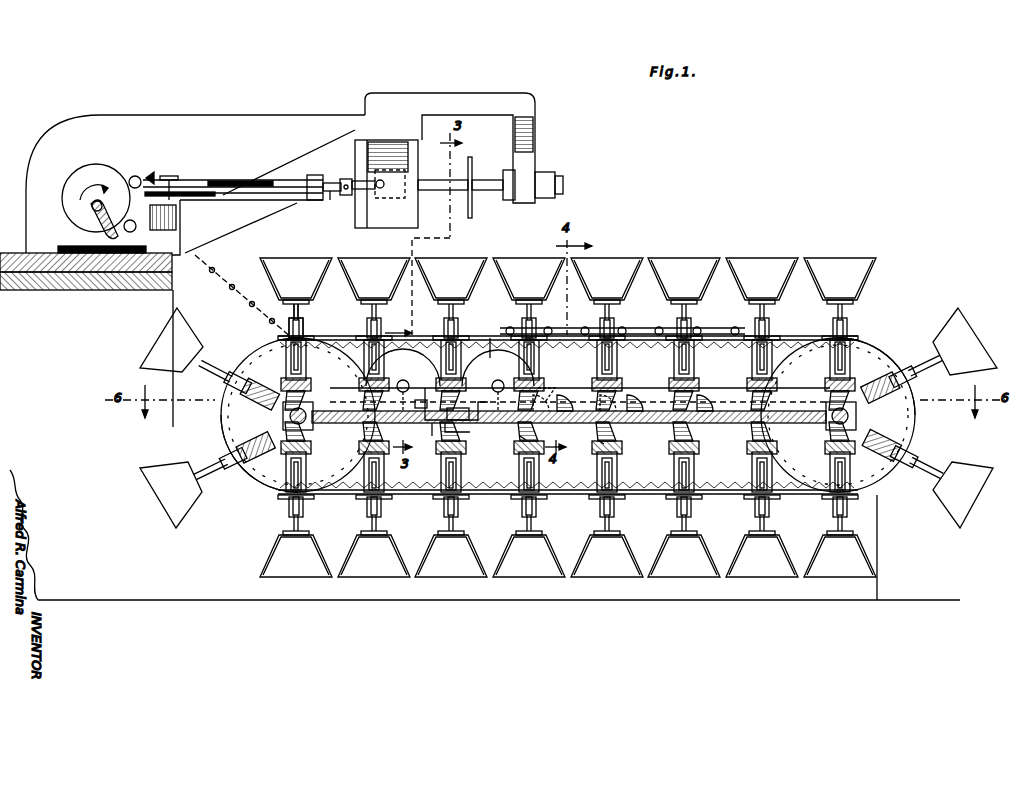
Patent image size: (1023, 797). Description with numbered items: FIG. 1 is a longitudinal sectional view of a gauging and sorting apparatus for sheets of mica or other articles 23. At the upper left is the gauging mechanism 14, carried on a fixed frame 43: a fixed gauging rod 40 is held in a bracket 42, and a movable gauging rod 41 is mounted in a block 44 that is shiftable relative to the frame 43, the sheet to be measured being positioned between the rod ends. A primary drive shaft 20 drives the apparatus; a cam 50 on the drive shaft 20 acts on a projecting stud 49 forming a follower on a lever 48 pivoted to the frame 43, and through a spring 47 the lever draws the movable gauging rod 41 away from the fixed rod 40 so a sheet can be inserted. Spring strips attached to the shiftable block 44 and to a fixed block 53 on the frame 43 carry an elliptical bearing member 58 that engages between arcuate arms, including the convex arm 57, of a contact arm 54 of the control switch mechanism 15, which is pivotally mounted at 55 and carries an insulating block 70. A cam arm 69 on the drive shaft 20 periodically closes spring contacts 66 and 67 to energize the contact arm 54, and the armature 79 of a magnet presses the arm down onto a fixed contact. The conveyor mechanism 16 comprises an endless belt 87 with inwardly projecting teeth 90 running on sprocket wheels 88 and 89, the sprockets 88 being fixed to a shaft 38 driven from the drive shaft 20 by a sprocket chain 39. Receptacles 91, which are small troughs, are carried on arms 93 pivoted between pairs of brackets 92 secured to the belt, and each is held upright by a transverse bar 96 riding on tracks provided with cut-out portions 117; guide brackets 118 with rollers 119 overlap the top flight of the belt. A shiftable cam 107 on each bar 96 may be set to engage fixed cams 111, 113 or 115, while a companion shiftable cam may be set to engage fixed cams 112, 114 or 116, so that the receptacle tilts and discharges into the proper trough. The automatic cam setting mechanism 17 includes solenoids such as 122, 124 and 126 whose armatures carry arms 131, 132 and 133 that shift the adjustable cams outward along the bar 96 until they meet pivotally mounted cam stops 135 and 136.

The gauging mechanism 14 is at (474, 92).
The control switch mechanism 15 is at (190, 178).
The conveyor mechanism 16 is at (706, 254).
The automatic cam setting mechanism 17 is at (177, 218).
The primary drive shaft 20 is at (92, 206).
The sheets of mica or other articles 23 is at (473, 170).
The shaft 38 is at (310, 412).
The sprocket chain 39 is at (244, 272).
The fixed gauging rod 40 is at (490, 192).
The movable gauging rod 41 is at (438, 192).
The bracket 42 is at (532, 148).
The fixed frame 43 is at (262, 115).
The block 44 is at (402, 145).
The spring 47 is at (152, 172).
The lever 48 is at (134, 176).
The projecting stud 49 is at (136, 229).
The cam 50 is at (92, 168).
The fixed block 53 is at (385, 196).
The contact arm 54 is at (283, 180).
The pivotal mounting 55 is at (316, 183).
The arcuate arm 57 is at (323, 200).
The elliptical bearing member 58 is at (344, 179).
The spring contact 66 is at (82, 262).
The second spring contact 67 is at (110, 262).
The cam arm 69 is at (104, 222).
The insulating block 70 is at (230, 180).
The armature 79 is at (168, 175).
The endless belt 87 is at (872, 350).
The sprocket wheels 88 is at (266, 478).
The sprocket wheels 89 is at (872, 470).
The inwardly projecting teeth 90 is at (321, 453).
The receptacles 91 is at (780, 258).
The brackets 92 is at (305, 328).
The arm 93 is at (302, 312).
The transverse bar 96 is at (463, 380).
The shiftable cam 107 is at (600, 386).
The fixed cam 111 is at (574, 406).
The fixed cam 112 is at (512, 432).
The fixed cam 113 is at (624, 399).
The fixed cam 114 is at (590, 436).
The fixed cam 115 is at (716, 404).
The fixed cam 116 is at (615, 406).
The cut-out portions 117 is at (545, 388).
The guide brackets 118 is at (714, 338).
The rollers 119 is at (626, 336).
The solenoid 122 is at (398, 366).
The solenoid 124 is at (492, 346).
The solenoid 126 is at (436, 372).
The arm 131 is at (412, 396).
The arm 132 is at (465, 404).
The arm 133 is at (459, 412).
The cam stop 135 is at (432, 433).
The cam stop 136 is at (470, 434).